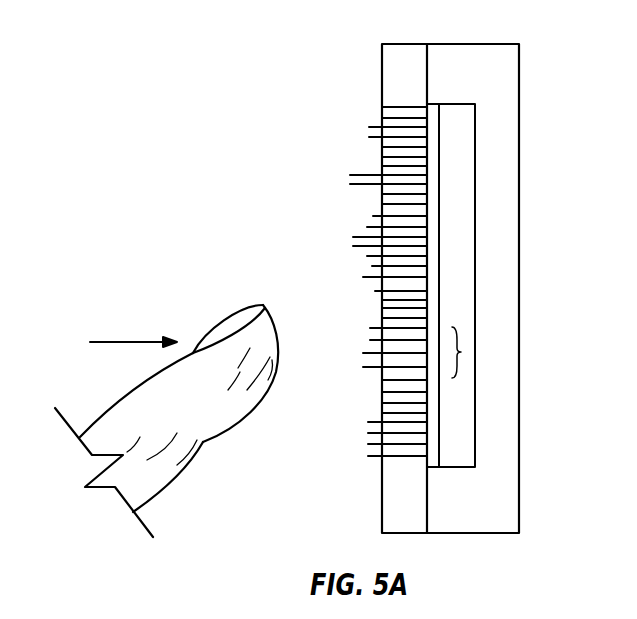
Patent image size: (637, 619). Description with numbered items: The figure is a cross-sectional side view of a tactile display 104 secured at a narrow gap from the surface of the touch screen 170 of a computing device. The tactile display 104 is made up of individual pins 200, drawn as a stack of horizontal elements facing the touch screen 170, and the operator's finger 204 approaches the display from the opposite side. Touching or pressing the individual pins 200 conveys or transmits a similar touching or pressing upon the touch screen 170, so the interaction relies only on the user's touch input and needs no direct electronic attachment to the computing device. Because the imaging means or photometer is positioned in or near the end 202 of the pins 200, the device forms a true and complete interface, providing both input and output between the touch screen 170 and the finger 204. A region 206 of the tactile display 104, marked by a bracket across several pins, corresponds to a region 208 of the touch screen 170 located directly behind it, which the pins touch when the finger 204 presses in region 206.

The tactile display 104 is at (409, 274).
The touch screen 170 is at (387, 270).
The pins 200 is at (352, 291).
The end of the pins 202 is at (365, 260).
The finger 204 is at (156, 421).
The region 206 is at (360, 327).
The region 208 is at (524, 369).